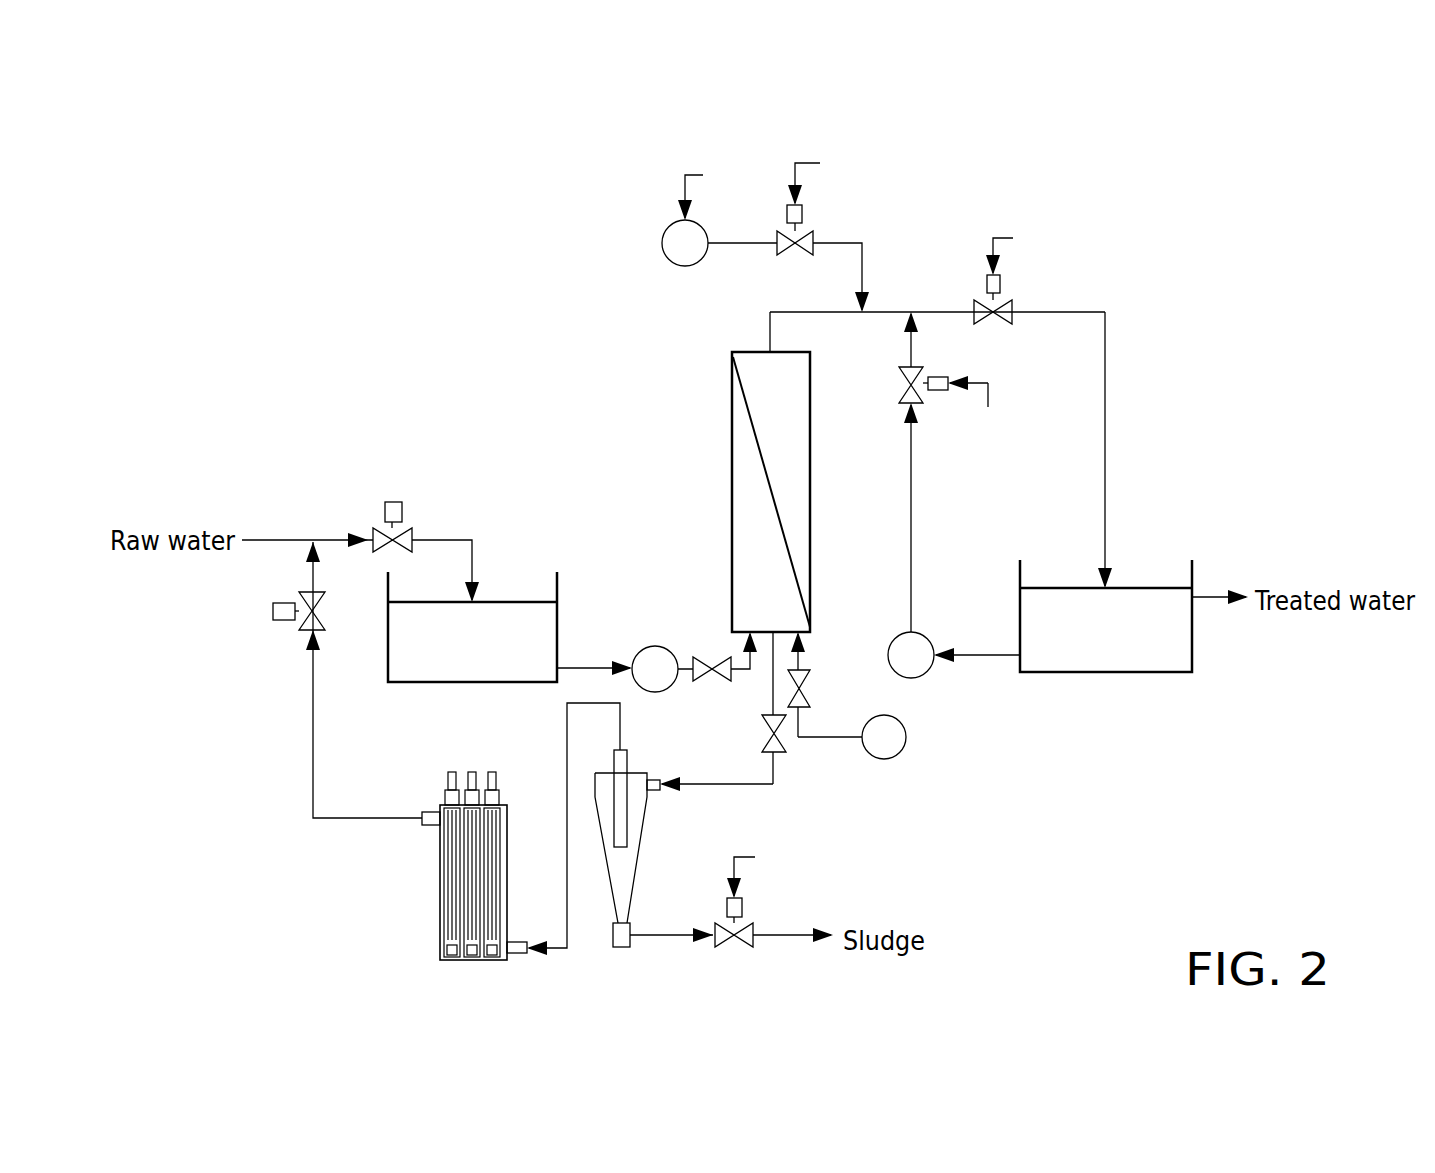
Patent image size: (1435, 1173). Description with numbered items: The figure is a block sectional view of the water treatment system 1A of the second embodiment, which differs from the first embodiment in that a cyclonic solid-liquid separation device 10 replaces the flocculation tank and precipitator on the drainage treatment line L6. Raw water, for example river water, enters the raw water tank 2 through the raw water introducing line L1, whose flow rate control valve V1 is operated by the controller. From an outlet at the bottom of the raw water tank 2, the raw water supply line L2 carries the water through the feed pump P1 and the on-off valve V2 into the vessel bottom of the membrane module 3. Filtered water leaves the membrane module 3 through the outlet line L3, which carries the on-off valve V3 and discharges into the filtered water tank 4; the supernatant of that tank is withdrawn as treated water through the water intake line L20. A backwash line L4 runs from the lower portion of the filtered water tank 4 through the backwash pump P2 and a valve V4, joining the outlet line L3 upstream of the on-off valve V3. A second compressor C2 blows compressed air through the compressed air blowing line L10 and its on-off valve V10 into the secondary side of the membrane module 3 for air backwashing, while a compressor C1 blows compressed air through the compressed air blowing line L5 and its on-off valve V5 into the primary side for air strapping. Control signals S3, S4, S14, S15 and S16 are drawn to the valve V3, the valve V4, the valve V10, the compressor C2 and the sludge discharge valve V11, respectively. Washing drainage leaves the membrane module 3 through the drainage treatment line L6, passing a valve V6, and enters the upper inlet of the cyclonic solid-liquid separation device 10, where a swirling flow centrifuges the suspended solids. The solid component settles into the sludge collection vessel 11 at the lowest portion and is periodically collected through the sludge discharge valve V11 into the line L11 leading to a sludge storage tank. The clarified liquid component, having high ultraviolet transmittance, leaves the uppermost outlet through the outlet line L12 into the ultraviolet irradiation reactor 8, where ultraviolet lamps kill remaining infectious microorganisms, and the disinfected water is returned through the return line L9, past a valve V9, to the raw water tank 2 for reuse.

The water treatment system 1A is at (572, 385).
The raw water tank 2 is at (560, 610).
The membrane module 3 is at (732, 400).
The filtered water tank 4 is at (1194, 568).
The ultraviolet irradiation reactor 8 is at (440, 902).
The cyclonic solid-liquid separation device 10 is at (637, 870).
The sludge collection vessel 11 is at (620, 948).
The raw water introducing line L1 is at (318, 538).
The raw water supply line L2 is at (597, 665).
The outlet line L3 is at (1106, 388).
The backwash line L4 is at (910, 478).
The compressed air blowing line L5 is at (833, 739).
The drainage treatment line L6 is at (773, 772).
The return line L9 is at (311, 745).
The compressed air blowing line L10 is at (863, 269).
The sludge line L11 is at (680, 940).
The outlet line L12 is at (566, 732).
The water intake line L20 is at (1206, 603).
The flow rate control valve V1 is at (404, 524).
The on-off valve V2 is at (718, 658).
The on-off valve V3 is at (1012, 310).
The valve V4 is at (899, 383).
The on-off valve V5 is at (812, 683).
The valve V6 is at (762, 733).
The valve V9 is at (303, 622).
The on-off valve V10 is at (812, 235).
The sludge discharge valve V11 is at (750, 923).
The feed pump P1 is at (655, 646).
The backwash pump P2 is at (928, 638).
The compressor C1 is at (907, 737).
The second compressor C2 is at (662, 243).
The control signal S3 is at (1004, 240).
The control signal S4 is at (988, 392).
The control signal S14 is at (811, 168).
The control signal S15 is at (704, 180).
The control signal S16 is at (752, 862).